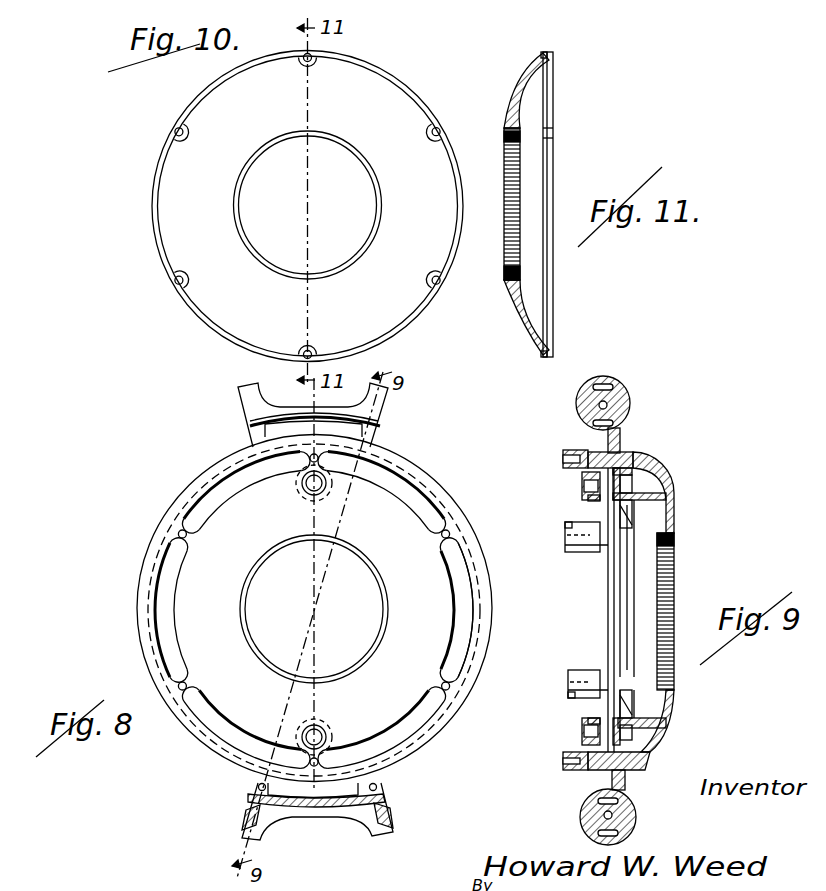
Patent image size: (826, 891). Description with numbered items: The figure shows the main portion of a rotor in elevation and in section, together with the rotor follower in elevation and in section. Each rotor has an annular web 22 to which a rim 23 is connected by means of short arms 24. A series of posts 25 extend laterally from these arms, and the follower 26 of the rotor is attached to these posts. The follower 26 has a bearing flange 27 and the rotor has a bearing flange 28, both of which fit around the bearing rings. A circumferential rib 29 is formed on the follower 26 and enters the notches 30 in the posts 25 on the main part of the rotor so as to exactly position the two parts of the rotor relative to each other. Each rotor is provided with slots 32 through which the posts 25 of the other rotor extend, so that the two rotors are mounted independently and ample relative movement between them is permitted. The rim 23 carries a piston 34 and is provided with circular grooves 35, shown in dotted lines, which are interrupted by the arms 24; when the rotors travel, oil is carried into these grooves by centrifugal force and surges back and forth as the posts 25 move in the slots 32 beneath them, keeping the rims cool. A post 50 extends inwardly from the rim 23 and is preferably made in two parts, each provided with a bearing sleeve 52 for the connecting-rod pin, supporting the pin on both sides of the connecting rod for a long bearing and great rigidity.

In FIG. 8, the annular web 22 is at (314, 608).
In FIG. 9, the annular web 22 is at (677, 526).
In FIG. 8, the rim 23 is at (218, 474).
In FIG. 9, the rim 23 is at (621, 439).
In FIG. 8, the short arms 24 is at (188, 532).
In FIG. 9, the short arms 24 is at (630, 555).
In FIG. 9, the posts 25 is at (578, 548).
In FIG. 10, the follower 26 is at (307, 206).
In FIG. 11, the follower 26 is at (518, 318).
In FIG. 10, the bearing flange 27 is at (275, 270).
In FIG. 11, the bearing flange 27 is at (508, 280).
In FIG. 8, the bearing flange 28 is at (280, 672).
In FIG. 9, the bearing flange 28 is at (677, 546).
In FIG. 11, the circumferential rib 29 is at (554, 331).
In FIG. 9, the notches 30 is at (562, 460).
In FIG. 8, the slots 32 is at (250, 474).
In FIG. 9, the slots 32 is at (630, 611).
In FIG. 8, the piston 34 is at (238, 407).
In FIG. 9, the piston 34 is at (630, 405).
In FIG. 8, the circular grooves 35 is at (462, 580).
In FIG. 9, the circular grooves 35 is at (628, 630).
In FIG. 9, the post 50 is at (590, 500).
In FIG. 8, the bearing sleeve 52 is at (327, 484).
In FIG. 9, the bearing sleeve 52 is at (582, 486).